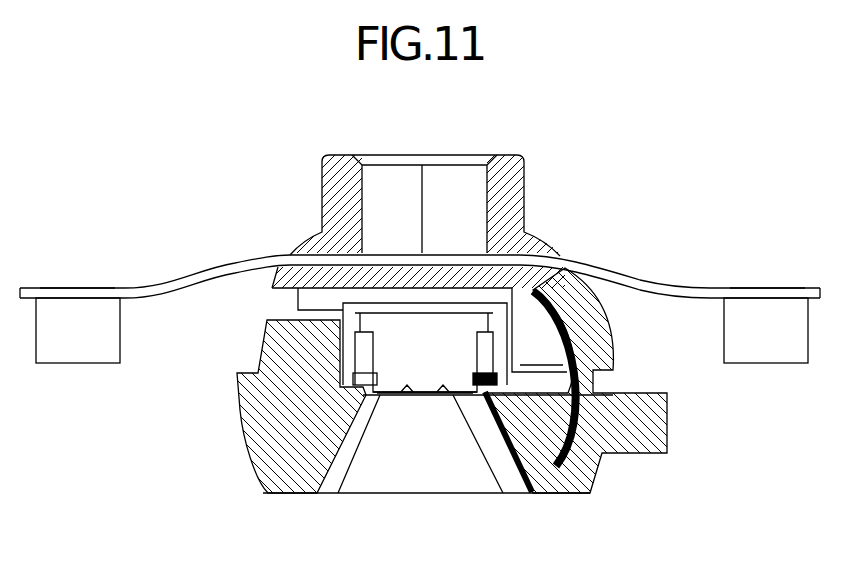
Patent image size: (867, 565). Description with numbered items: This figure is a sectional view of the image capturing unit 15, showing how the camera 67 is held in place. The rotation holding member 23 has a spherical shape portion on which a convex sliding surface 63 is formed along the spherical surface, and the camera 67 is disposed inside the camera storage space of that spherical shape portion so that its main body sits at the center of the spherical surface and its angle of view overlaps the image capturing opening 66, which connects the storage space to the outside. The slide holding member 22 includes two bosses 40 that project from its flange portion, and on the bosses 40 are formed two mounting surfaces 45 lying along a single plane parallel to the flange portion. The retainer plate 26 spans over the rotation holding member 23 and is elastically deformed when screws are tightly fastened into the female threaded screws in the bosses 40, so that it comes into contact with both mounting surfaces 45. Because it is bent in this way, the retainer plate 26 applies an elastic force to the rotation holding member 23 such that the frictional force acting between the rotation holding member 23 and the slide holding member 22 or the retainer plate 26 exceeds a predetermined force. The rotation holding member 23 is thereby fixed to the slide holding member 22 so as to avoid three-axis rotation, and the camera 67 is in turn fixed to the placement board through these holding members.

The image capturing unit 15 is at (745, 159).
The retainer plate 26 is at (640, 268).
The mounting surfaces 45 is at (78, 288).
The bosses 40 is at (70, 365).
The slide holding member 22 is at (765, 365).
The sliding surface 63 is at (255, 458).
The rotation holding member 23 is at (600, 470).
The camera 67 is at (423, 372).
The image capturing opening 66 is at (472, 482).